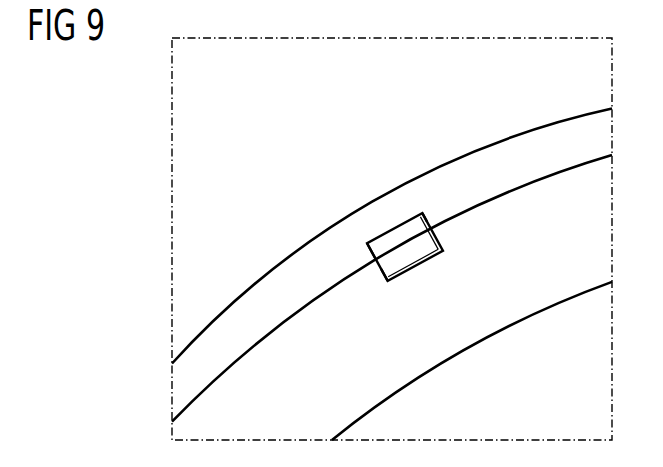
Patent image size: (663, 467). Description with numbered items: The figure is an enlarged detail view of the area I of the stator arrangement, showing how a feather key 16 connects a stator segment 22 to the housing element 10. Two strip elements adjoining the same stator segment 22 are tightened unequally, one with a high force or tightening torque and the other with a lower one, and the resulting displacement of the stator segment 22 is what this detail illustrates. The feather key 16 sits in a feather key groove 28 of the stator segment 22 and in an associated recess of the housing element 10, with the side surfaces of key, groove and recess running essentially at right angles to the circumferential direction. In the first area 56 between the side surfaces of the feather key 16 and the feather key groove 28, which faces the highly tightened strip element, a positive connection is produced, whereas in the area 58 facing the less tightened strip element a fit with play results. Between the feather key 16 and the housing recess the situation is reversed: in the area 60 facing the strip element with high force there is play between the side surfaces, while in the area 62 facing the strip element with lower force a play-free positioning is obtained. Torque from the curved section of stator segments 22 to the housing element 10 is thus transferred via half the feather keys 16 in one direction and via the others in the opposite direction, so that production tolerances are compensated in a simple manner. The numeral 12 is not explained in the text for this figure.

The area I is at (172, 218).
The housing element 10 is at (258, 298).
The tire 12 is at (245, 105).
The feather key 16 is at (400, 236).
The stator segment 22 is at (495, 323).
The feather key groove 28 is at (406, 288).
The first area 56 is at (452, 241).
The area 58 is at (372, 281).
The area 60 is at (438, 212).
The area 62 is at (356, 247).